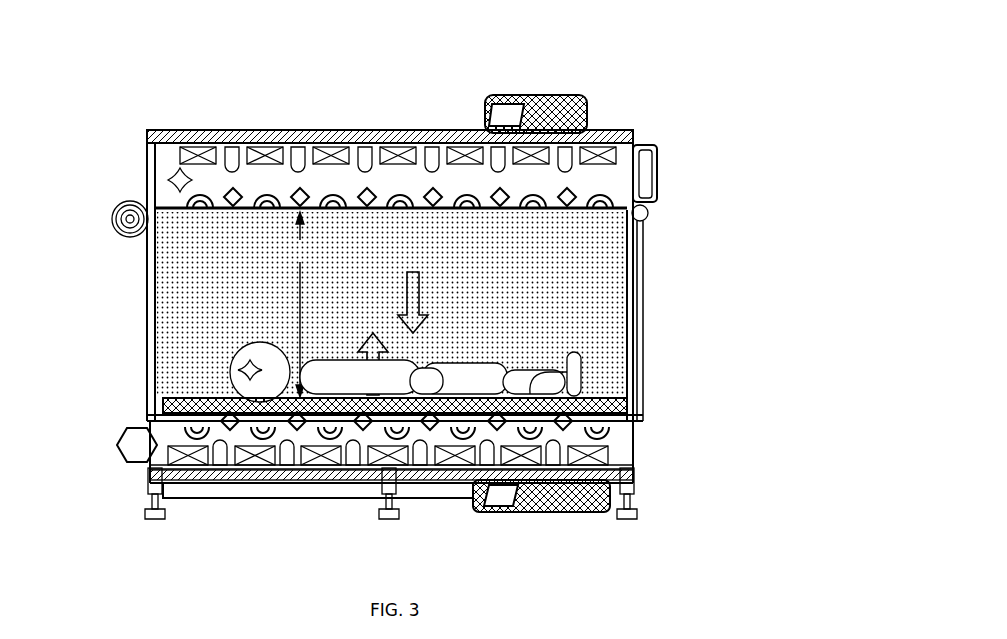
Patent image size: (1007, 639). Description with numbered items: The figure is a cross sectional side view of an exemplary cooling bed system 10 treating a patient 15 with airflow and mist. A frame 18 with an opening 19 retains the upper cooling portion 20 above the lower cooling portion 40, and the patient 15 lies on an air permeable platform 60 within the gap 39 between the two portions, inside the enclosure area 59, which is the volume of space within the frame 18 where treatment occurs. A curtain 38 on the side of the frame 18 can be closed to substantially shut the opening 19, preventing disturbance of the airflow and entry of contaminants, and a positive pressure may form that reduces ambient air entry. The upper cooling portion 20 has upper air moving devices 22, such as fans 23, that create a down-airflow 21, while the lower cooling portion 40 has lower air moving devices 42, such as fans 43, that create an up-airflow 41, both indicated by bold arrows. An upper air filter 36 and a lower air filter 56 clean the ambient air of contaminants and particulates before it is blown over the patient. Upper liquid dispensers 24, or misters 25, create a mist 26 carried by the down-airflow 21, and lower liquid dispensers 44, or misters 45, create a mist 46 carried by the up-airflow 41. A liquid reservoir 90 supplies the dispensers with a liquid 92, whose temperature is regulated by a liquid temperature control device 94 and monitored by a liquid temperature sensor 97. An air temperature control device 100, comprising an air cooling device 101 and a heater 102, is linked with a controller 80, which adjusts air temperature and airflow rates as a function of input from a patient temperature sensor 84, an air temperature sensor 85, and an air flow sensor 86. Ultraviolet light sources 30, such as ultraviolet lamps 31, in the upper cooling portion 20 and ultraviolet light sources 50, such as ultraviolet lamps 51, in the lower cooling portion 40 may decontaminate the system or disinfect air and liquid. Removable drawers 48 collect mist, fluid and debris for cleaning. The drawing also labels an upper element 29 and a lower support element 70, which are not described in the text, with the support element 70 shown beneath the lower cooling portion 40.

The cooling bed system 10 is at (735, 86).
The patient 15 is at (643, 325).
The frame 18 is at (150, 412).
The opening 19 is at (185, 255).
The upper cooling portion 20 is at (655, 135).
The down-airflow 21 is at (430, 300).
The upper air moving devices 22 is at (277, 130).
The fans 23 is at (190, 147).
The upper liquid dispensers 24 is at (150, 196).
The misters 25 is at (175, 175).
The mist 26 is at (185, 320).
The insulation layer 29 is at (322, 130).
The ultraviolet light sources 30 is at (362, 130).
The ultraviolet lamps 31 is at (380, 130).
The upper air filter 36 is at (633, 132).
The curtain 38 is at (112, 220).
The gap 39 is at (301, 304).
The lower cooling portion 40 is at (618, 452).
The up-airflow 41 is at (385, 325).
The lower air moving devices 42 is at (447, 484).
The fans 43 is at (165, 505).
The lower liquid dispensers 44 is at (160, 422).
The misters 45 is at (520, 370).
The mist 46 is at (567, 365).
The collection drawers 48 is at (200, 500).
The ultraviolet light sources 50 is at (392, 520).
The ultraviolet lamps 51 is at (340, 486).
The lower air filter 56 is at (277, 466).
The enclosure area 59 is at (568, 268).
The air permeable platform 60 is at (645, 372).
The leg 70 is at (638, 510).
The controller 80 is at (130, 447).
The patient temperature sensor 84 is at (240, 372).
The air temperature sensor 85 is at (147, 130).
The upper air flow sensor 86 is at (430, 195).
The liquid reservoir 90 is at (585, 98).
The liquid 92 is at (527, 98).
The liquid temperature control device 94 is at (500, 102).
The liquid temperature sensor 97 is at (550, 98).
The air temperature control device 100 is at (660, 152).
The air cooling device 101 is at (658, 172).
The heater 102 is at (658, 192).